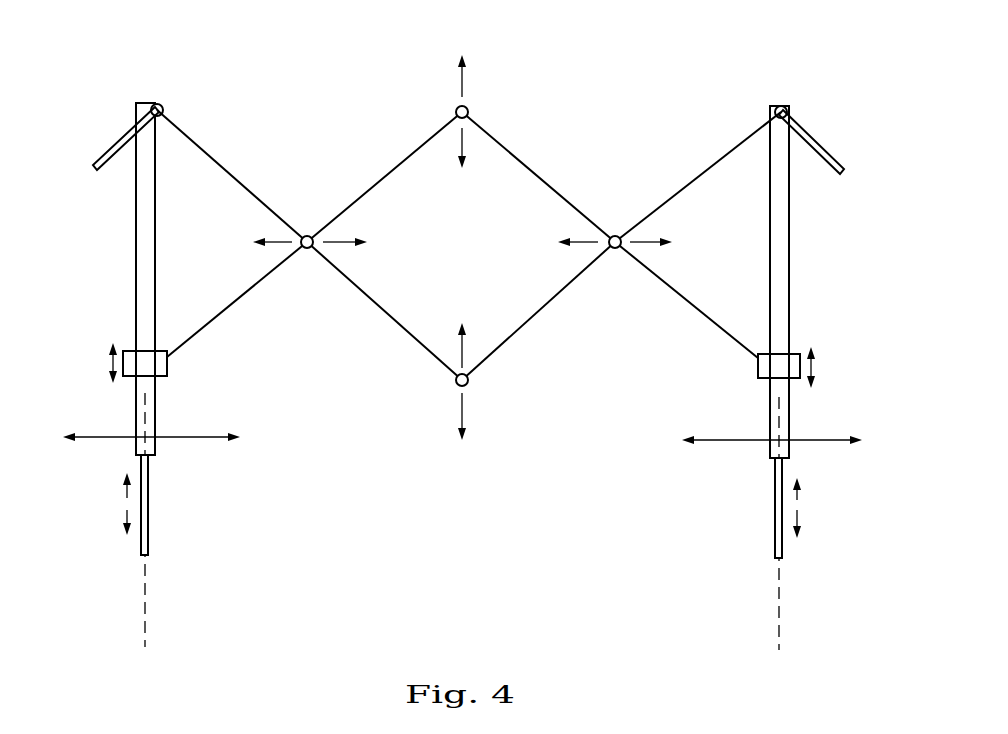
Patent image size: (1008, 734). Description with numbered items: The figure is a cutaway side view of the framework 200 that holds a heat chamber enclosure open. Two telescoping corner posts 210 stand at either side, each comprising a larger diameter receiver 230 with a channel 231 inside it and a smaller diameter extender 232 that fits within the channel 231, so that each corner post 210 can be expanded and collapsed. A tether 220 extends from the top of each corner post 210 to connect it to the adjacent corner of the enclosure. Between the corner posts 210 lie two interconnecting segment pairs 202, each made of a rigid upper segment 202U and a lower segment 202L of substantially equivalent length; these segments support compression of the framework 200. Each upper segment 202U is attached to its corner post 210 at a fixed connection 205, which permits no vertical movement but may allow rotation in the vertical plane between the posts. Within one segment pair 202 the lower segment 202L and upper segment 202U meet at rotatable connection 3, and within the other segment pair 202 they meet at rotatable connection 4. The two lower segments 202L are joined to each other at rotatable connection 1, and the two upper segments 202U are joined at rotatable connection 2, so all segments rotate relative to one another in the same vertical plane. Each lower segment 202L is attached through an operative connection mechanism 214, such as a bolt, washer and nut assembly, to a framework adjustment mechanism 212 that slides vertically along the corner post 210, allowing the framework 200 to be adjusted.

The framework 200 is at (604, 68).
The fixed connection 205 is at (160, 104).
The tether 220 is at (108, 150).
The segment pair 202 is at (469, 246).
The upper segment 202U is at (210, 157).
The lower segment 202L is at (215, 320).
The corner post 210 is at (136, 268).
The receiver 230 is at (156, 268).
The operative connection mechanism 214 is at (168, 350).
The framework adjustment mechanism 212 is at (124, 364).
The channel 231 is at (148, 396).
The extender 232 is at (148, 498).
The rotatable connection 1 is at (468, 108).
The rotatable connection 2 is at (467, 384).
The rotatable connection 3 is at (307, 236).
The rotatable connection 4 is at (614, 236).